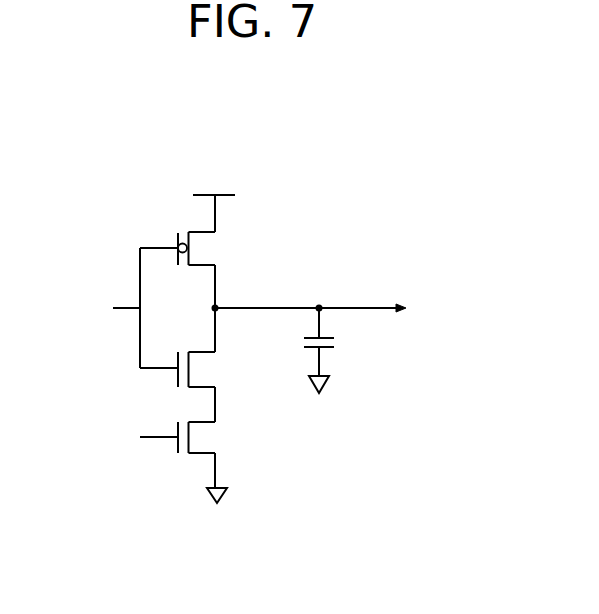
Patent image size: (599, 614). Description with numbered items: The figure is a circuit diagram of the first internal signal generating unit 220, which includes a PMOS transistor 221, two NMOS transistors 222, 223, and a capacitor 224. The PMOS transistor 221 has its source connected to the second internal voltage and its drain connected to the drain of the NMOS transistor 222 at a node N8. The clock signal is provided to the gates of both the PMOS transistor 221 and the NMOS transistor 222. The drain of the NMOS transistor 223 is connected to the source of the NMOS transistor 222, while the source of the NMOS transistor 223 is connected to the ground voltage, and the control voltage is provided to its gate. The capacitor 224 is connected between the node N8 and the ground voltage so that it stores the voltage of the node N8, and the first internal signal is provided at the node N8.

The first internal signal generating unit 220 is at (253, 114).
The PMOS transistor 221 is at (203, 250).
The NMOS transistor 222 is at (203, 372).
The NMOS transistor 223 is at (203, 439).
The capacitor 224 is at (334, 345).
The node N8 is at (321, 303).